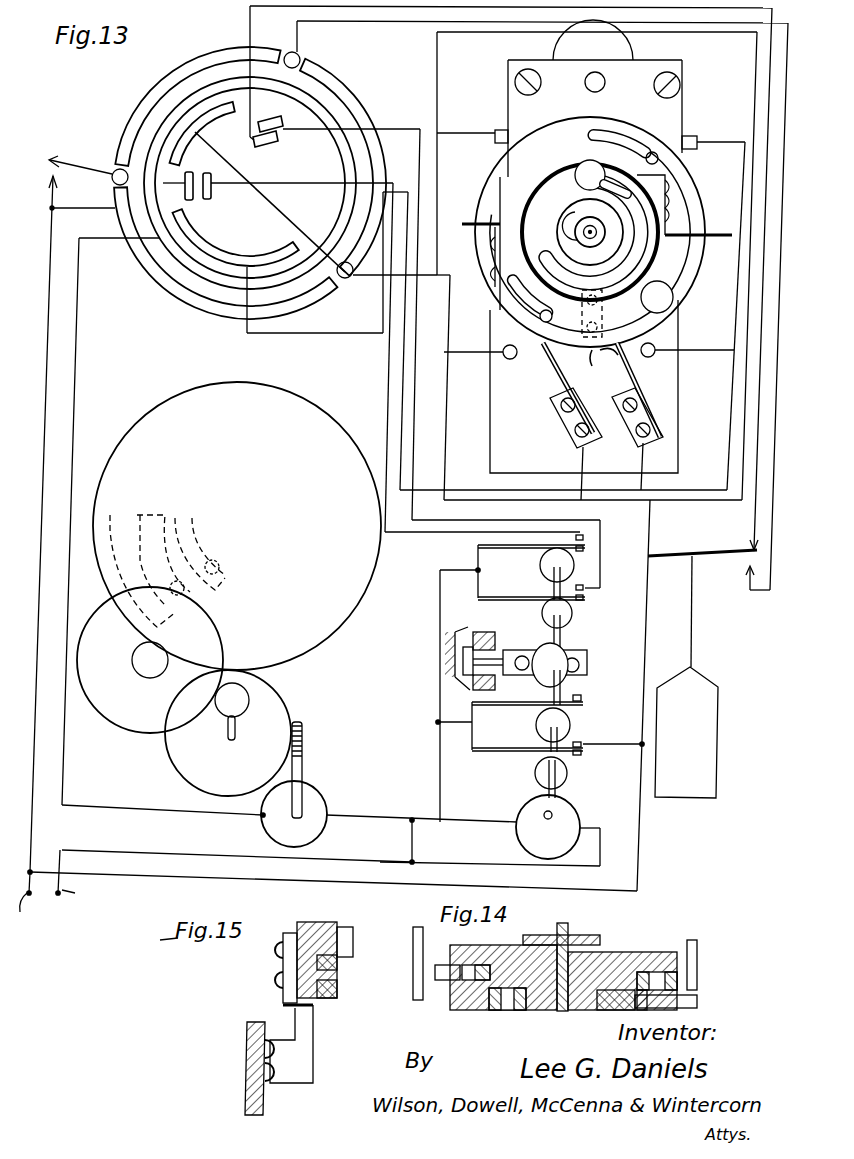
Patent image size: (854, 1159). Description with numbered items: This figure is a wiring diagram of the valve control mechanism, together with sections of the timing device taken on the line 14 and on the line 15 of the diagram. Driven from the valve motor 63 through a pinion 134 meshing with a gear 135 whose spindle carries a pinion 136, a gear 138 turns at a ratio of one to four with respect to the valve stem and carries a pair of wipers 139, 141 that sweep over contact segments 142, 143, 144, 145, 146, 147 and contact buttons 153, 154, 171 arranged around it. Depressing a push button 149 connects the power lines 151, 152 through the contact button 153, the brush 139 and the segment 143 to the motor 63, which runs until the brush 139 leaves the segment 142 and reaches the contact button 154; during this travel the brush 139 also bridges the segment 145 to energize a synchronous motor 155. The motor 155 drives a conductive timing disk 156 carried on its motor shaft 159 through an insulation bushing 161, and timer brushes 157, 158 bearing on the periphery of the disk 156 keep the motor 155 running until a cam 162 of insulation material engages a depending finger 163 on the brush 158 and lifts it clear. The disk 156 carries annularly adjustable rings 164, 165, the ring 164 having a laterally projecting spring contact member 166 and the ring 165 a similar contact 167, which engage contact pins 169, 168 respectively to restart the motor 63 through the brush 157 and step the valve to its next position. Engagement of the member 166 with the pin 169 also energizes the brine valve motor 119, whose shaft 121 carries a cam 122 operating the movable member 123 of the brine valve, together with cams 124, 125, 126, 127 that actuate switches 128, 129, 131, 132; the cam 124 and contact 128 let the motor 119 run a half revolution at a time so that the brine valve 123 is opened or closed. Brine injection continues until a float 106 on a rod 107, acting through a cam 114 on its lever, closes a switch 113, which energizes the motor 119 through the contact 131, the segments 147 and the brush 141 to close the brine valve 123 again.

In FIG. 13, the gear 138 is at (250, 183).
In FIG. 13, the contact segment 142 is at (318, 76).
In FIG. 13, the contact segment 143 is at (316, 108).
In FIG. 13, the contact segment 144 is at (205, 112).
In FIG. 13, the contact segment 145 is at (190, 218).
In FIG. 13, the contact segment 146 is at (278, 175).
In FIG. 13, the contact segment 147 is at (276, 140).
In FIG. 13, the contact button 171 is at (300, 57).
In FIG. 13, the contact button 153 is at (115, 170).
In FIG. 13, the contact button 154 is at (347, 279).
In FIG. 13, the push button 149 is at (72, 495).
In FIG. 13, the power line 151 is at (24, 913).
In FIG. 13, the power line 152 is at (85, 894).
In FIG. 13, the synchronous electric motor 155 is at (677, 111).
In FIG. 13, the annularly adjustable ring 165 is at (590, 232).
In FIG. 14, the annularly adjustable ring 165 is at (668, 1004).
In FIG. 15, the annularly adjustable ring 165 is at (337, 993).
In FIG. 13, the annularly adjustable ring 164 is at (584, 316).
In FIG. 14, the annularly adjustable ring 164 is at (612, 1008).
In FIG. 13, the timing disk 156 is at (590, 232).
In FIG. 14, the timing disk 156 is at (632, 952).
In FIG. 15, the timing disk 156 is at (302, 922).
In FIG. 13, the insulation bushing 161 is at (580, 219).
In FIG. 14, the insulation bushing 161 is at (590, 940).
In FIG. 13, the motor shaft 159 is at (592, 230).
In FIG. 14, the motor shaft 159 is at (569, 927).
In FIG. 13, the section line 14 is at (447, 238).
In FIG. 13, the section line 15 is at (598, 280).
In FIG. 13, the spring contact member 166 is at (724, 232).
In FIG. 14, the spring contact member 166 is at (695, 1000).
In FIG. 13, the contact member 167 is at (466, 222).
In FIG. 14, the contact member 167 is at (445, 982).
In FIG. 13, the contact pin 168 is at (656, 348).
In FIG. 14, the contact pin 168 is at (698, 963).
In FIG. 13, the contact pin 169 is at (504, 348).
In FIG. 14, the contact pin 169 is at (413, 968).
In FIG. 13, the timer brush 157 is at (566, 372).
In FIG. 13, the timer brush 158 is at (628, 378).
In FIG. 15, the timer brush 158 is at (313, 1056).
In FIG. 13, the cam 162 is at (602, 368).
In FIG. 15, the cam 162 is at (283, 962).
In FIG. 13, the wiper 139 is at (180, 594).
In FIG. 13, the wiper 141 is at (218, 566).
In FIG. 13, the gear 135 is at (141, 727).
In FIG. 13, the pinion 136 is at (144, 674).
In FIG. 13, the pinion 134 is at (250, 698).
In FIG. 13, the motor 63 is at (318, 806).
In FIG. 13, the switch 132 is at (590, 528).
In FIG. 13, the cam 127 is at (548, 563).
In FIG. 13, the switch 131 is at (588, 588).
In FIG. 13, the cam 126 is at (566, 613).
In FIG. 13, the movable valve member 123 is at (474, 649).
In FIG. 13, the shaft 121 is at (548, 655).
In FIG. 13, the cam 122 is at (562, 655).
In FIG. 13, the switch 129 is at (578, 695).
In FIG. 13, the cam 125 is at (568, 724).
In FIG. 13, the switch 128 is at (578, 742).
In FIG. 13, the cam 124 is at (566, 773).
In FIG. 13, the motor 119 is at (567, 815).
In FIG. 13, the cam 114 is at (752, 546).
In FIG. 13, the switch 113 is at (748, 585).
In FIG. 13, the rod 107 is at (692, 636).
In FIG. 13, the float 106 is at (710, 725).
In FIG. 15, the depending finger 163 is at (283, 1006).